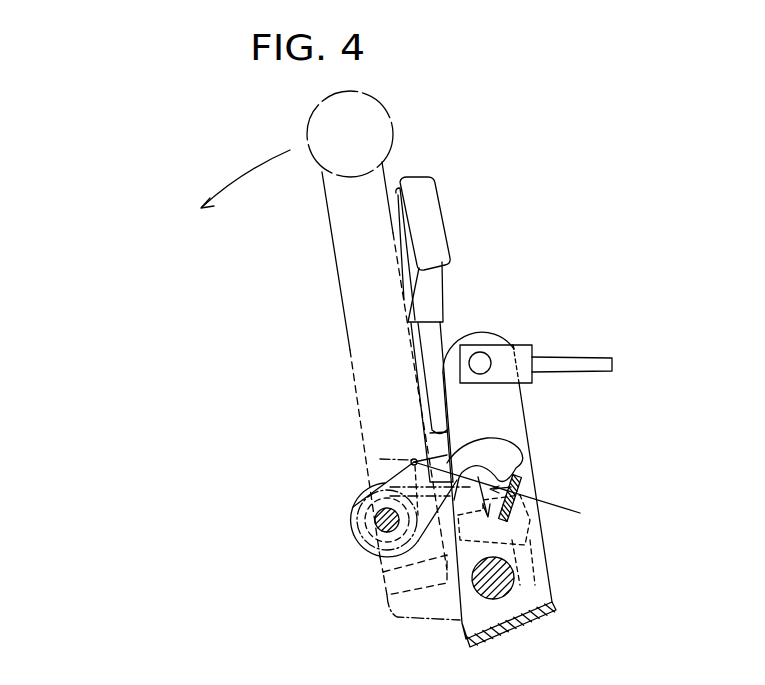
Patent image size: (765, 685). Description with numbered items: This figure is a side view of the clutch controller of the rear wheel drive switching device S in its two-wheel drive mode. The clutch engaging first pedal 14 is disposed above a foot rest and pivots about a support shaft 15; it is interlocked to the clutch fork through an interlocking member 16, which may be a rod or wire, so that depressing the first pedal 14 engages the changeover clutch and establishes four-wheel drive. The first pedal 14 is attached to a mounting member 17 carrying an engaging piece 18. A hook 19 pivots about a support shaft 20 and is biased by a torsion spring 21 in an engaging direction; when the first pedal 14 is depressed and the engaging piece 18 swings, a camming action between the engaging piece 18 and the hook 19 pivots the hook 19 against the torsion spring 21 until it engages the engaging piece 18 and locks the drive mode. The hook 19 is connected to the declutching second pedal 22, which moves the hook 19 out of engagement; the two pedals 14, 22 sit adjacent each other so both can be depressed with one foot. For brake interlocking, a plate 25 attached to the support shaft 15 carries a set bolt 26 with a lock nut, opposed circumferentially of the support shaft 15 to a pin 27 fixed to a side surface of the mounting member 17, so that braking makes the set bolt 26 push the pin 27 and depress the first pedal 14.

The first pedal 14 is at (307, 132).
The second pedal 22 is at (436, 226).
The interlocking member 16 is at (587, 357).
The mounting member 17 is at (510, 410).
The hook 19 is at (513, 460).
The engaging piece 18 is at (494, 494).
The torsion spring 21 is at (411, 459).
The support shaft 20 is at (372, 520).
The pin 27 is at (383, 572).
The plate 25 is at (520, 567).
The set bolt 26 is at (533, 514).
The support shaft 15 is at (513, 580).
The rear wheel drive switching device S is at (280, 456).